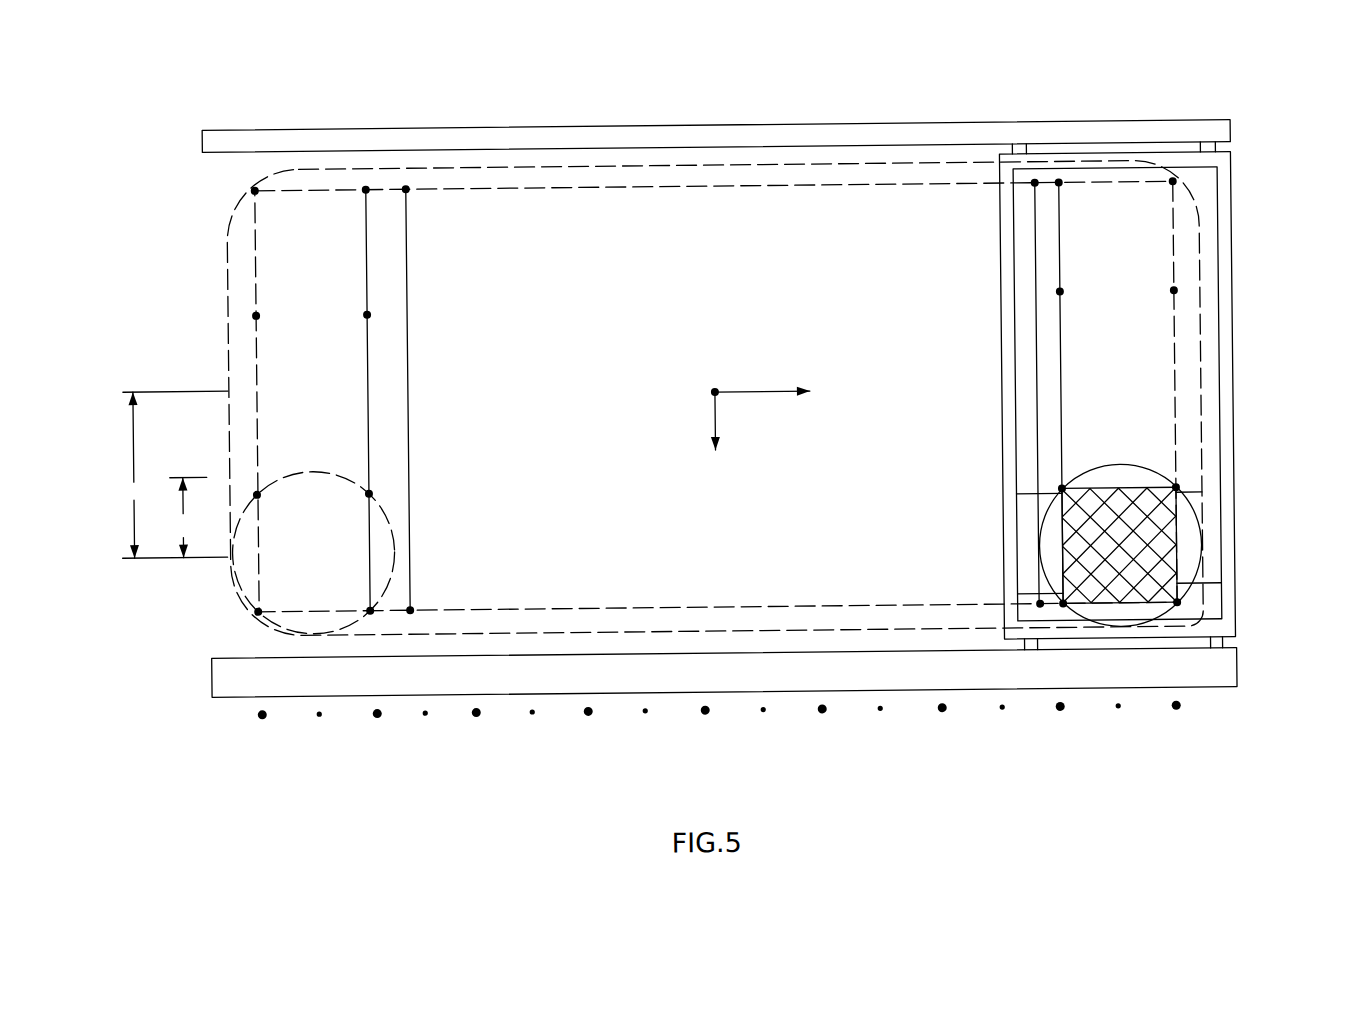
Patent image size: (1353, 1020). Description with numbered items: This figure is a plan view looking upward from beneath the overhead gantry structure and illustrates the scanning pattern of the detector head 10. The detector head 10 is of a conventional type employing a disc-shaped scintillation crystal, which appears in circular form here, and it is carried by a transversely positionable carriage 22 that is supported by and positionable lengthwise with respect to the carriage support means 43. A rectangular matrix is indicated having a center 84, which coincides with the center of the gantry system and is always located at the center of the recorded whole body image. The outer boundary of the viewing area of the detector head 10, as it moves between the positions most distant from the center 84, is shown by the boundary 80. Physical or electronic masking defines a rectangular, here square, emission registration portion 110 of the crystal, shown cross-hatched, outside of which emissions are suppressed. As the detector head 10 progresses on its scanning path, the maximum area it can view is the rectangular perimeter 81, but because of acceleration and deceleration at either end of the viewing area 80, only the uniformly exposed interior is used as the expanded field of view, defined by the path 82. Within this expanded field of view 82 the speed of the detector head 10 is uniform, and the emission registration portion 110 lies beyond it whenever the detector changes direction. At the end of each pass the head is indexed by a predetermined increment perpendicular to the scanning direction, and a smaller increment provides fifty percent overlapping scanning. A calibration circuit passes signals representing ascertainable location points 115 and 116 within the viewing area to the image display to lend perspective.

The detector head 10 is at (1220, 588).
The carriage 22 is at (987, 525).
The carriage support means 43 is at (1240, 238).
The boundary 80 is at (229, 285).
The rectangular perimeter 81 is at (257, 347).
The path 82 is at (408, 377).
The center 84 is at (750, 406).
The emission registration portion 110 is at (1161, 550).
The location point 115 is at (702, 712).
The location point 116 is at (997, 710).